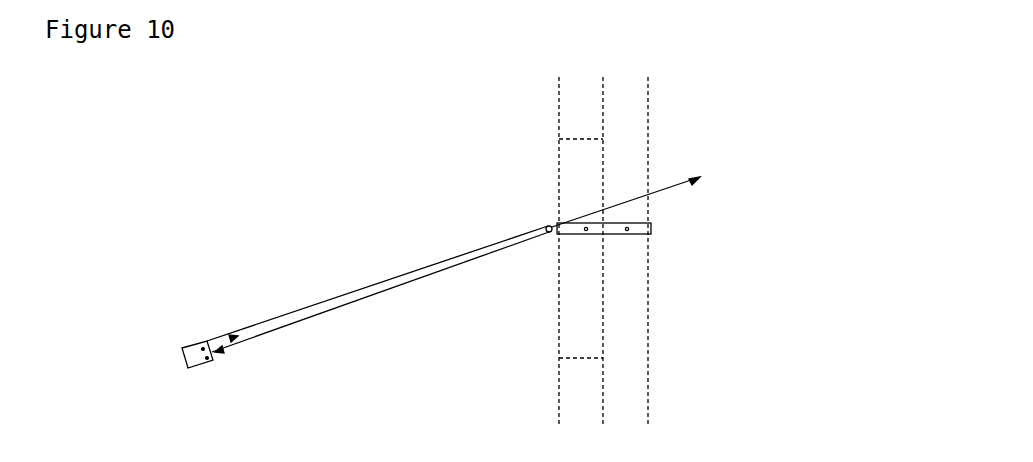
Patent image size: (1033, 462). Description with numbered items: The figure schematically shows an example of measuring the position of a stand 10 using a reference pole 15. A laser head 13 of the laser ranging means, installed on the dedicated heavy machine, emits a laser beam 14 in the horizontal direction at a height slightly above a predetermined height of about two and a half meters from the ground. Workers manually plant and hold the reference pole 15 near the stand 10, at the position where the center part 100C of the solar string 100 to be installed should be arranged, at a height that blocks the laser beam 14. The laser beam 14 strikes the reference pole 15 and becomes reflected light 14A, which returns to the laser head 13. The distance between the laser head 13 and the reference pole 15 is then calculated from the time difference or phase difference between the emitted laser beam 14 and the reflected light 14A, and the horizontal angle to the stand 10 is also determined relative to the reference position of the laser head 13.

The solar string 100 is at (589, 168).
The stand 10 is at (652, 228).
The center part of the solar string 100C is at (587, 234).
The reference pole 15 is at (547, 225).
The laser beam 14 is at (355, 294).
The reflected light 14A is at (346, 312).
The laser head 13 is at (204, 345).